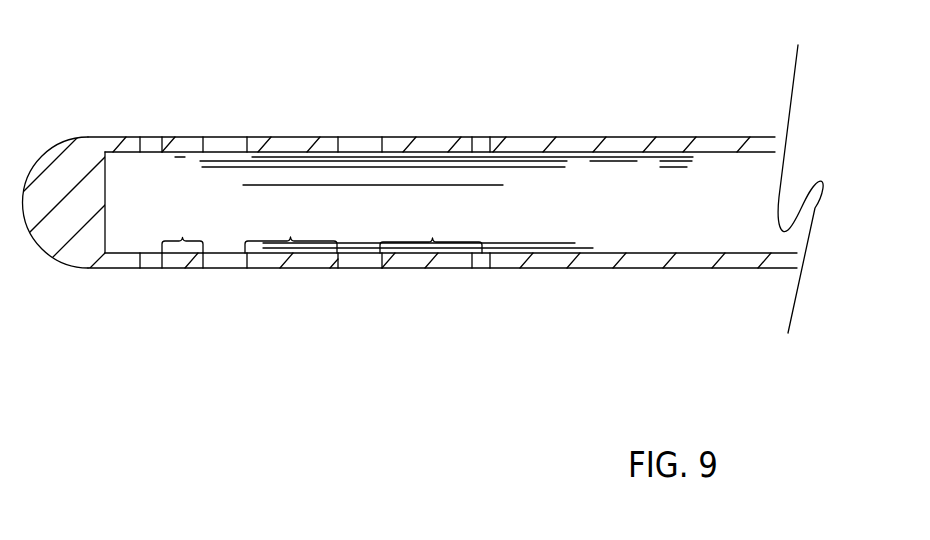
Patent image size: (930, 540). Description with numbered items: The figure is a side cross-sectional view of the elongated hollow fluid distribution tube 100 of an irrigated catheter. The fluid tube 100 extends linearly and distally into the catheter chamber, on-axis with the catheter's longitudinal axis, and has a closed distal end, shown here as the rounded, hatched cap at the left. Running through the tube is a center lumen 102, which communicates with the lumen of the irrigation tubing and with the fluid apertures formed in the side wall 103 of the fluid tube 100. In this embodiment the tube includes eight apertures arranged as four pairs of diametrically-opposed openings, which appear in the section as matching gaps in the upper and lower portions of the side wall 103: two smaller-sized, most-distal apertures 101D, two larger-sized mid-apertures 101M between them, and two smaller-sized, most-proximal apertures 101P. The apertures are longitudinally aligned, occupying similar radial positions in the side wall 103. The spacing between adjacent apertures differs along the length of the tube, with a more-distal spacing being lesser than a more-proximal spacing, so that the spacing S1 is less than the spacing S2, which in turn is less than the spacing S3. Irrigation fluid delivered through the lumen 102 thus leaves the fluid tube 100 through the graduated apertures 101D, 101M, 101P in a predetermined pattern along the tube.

The fluid distribution tube 100 is at (411, 198).
The most-distal apertures 101D is at (148, 138).
The mid-apertures 101M is at (228, 138).
The most-proximal apertures 101P is at (487, 136).
The center lumen 102 is at (598, 206).
The side wall 103 is at (623, 137).
The spacing S1 is at (182, 227).
The spacing S2 is at (291, 227).
The spacing S3 is at (431, 226).